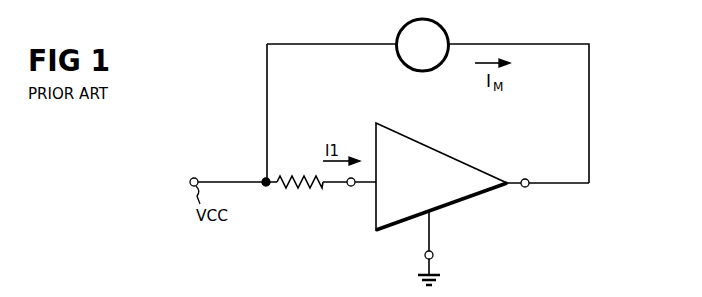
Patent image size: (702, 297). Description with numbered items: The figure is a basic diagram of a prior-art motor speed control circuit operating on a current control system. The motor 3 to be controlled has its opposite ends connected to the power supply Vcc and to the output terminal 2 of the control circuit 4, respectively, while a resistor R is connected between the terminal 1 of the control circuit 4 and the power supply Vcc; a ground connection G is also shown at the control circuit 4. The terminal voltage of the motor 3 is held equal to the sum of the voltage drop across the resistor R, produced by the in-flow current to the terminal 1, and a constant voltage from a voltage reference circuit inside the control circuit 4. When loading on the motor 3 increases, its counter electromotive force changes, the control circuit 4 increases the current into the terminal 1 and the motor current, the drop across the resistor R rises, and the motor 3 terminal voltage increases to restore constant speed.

The terminal 1 is at (351, 187).
The output terminal 2 is at (525, 188).
The motor 3 is at (446, 23).
The control circuit 4 is at (470, 168).
The resistor R is at (299, 188).
The ground terminal G is at (434, 255).